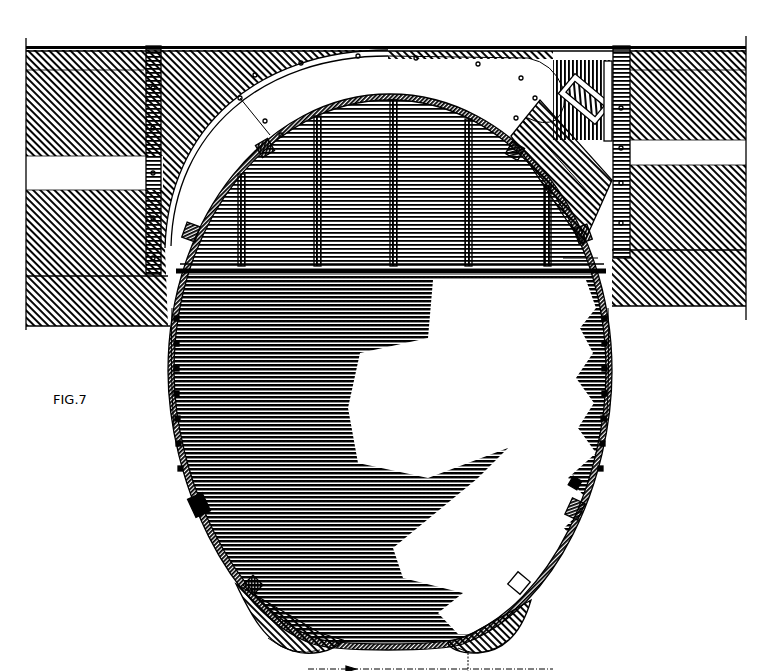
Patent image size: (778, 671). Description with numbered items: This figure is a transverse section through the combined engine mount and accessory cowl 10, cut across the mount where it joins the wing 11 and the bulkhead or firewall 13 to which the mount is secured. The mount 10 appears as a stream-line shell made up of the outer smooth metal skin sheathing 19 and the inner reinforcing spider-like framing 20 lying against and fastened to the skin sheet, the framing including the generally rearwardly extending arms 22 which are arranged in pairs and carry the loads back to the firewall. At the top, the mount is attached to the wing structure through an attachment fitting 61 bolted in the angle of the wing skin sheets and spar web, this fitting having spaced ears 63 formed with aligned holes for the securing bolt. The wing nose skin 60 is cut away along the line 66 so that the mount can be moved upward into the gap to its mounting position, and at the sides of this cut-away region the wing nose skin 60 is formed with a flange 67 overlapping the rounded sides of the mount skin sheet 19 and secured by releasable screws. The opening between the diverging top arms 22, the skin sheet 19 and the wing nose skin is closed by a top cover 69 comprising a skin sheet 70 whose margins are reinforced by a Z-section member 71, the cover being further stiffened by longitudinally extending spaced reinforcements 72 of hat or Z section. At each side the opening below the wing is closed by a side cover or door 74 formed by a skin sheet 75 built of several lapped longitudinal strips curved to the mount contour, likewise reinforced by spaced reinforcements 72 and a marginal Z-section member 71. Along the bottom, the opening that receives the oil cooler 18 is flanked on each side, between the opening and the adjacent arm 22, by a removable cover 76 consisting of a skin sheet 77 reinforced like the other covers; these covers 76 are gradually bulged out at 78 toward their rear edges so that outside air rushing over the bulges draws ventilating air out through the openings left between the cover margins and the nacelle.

The combined engine mount and accessory cowl 10 is at (606, 420).
The wing 11 is at (712, 300).
The bulkhead or firewall 13 is at (397, 419).
The oil cooler 18 is at (413, 662).
The outer skin sheathing 19 is at (210, 160).
The inner reinforcing spider-like framing 20 is at (545, 495).
The arms 22 is at (553, 242).
The wing nose skin 60 is at (546, 62).
The attachment fitting 61 is at (612, 52).
The spaced ears 63 is at (598, 56).
The cut-away line 66 is at (522, 82).
The flange 67 is at (198, 118).
The top cover 69 is at (390, 172).
The skin sheet of top cover 70 is at (448, 102).
The Z-section member 71 is at (289, 115).
The longitudinally extending reinforcements 72 is at (328, 93).
The side cover or door 74 is at (159, 350).
The skin sheet of side cover 75 is at (603, 393).
The removable cover 76 is at (520, 610).
The skin sheet of removable cover 77 is at (490, 607).
The bulged portion 78 is at (268, 637).